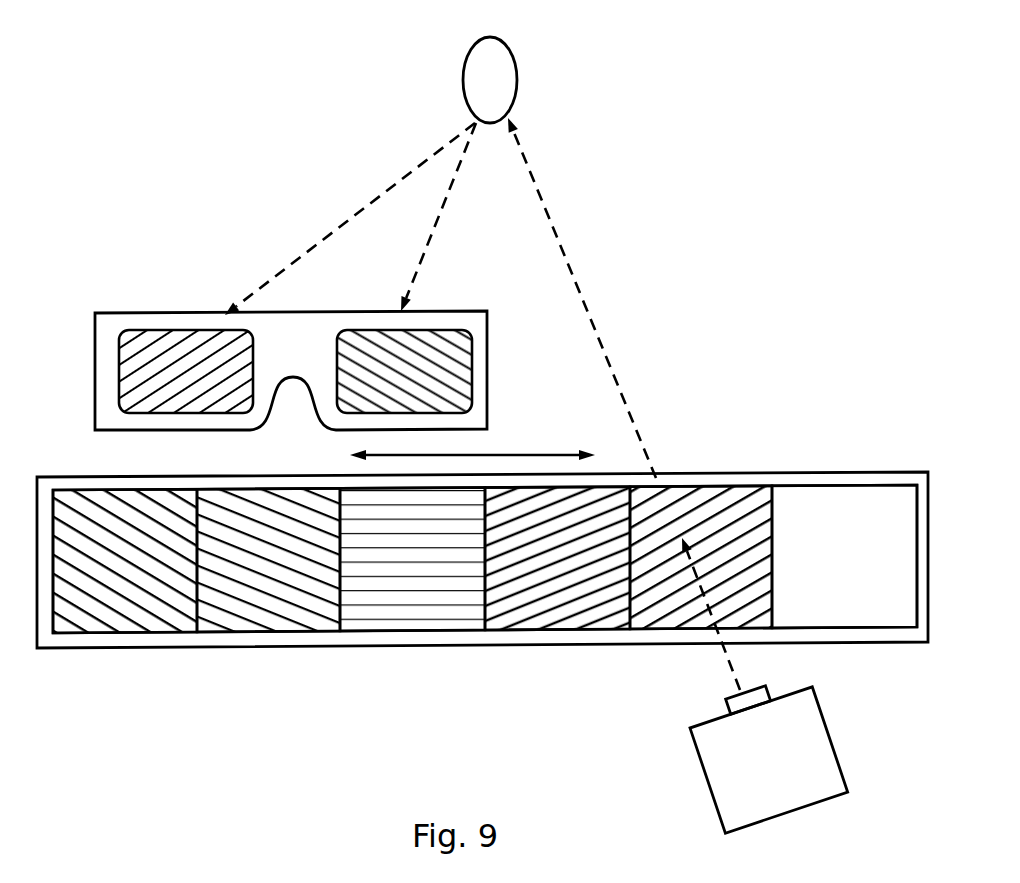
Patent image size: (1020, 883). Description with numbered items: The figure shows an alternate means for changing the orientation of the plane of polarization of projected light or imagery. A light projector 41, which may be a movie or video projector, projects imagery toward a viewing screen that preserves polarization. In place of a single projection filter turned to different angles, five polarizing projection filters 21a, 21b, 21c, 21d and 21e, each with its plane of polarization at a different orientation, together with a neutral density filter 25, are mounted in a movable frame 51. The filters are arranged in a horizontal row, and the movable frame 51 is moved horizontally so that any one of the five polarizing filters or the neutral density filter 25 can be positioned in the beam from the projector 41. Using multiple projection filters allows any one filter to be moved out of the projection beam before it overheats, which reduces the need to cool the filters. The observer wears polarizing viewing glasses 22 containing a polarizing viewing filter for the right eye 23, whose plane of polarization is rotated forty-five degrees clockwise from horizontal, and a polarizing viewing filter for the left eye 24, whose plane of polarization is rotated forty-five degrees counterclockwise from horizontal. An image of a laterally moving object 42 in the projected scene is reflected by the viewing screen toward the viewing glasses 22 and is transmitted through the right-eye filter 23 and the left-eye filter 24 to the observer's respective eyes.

The laterally moving object 42 is at (500, 82).
The polarizing viewing filter for the right eye 23 is at (440, 298).
The viewing glasses 22 is at (173, 325).
The polarizing viewing filter for the left eye 24 is at (148, 348).
The movable frame 51 is at (492, 638).
The polarizing projection filter 21a is at (437, 597).
The polarizing projection filter 21b is at (285, 595).
The polarizing projection filter 21c is at (148, 605).
The polarizing projection filter 21d is at (585, 605).
The polarizing projection filter 21e is at (735, 503).
The neutral density filter 25 is at (850, 507).
The projector 41 is at (792, 747).